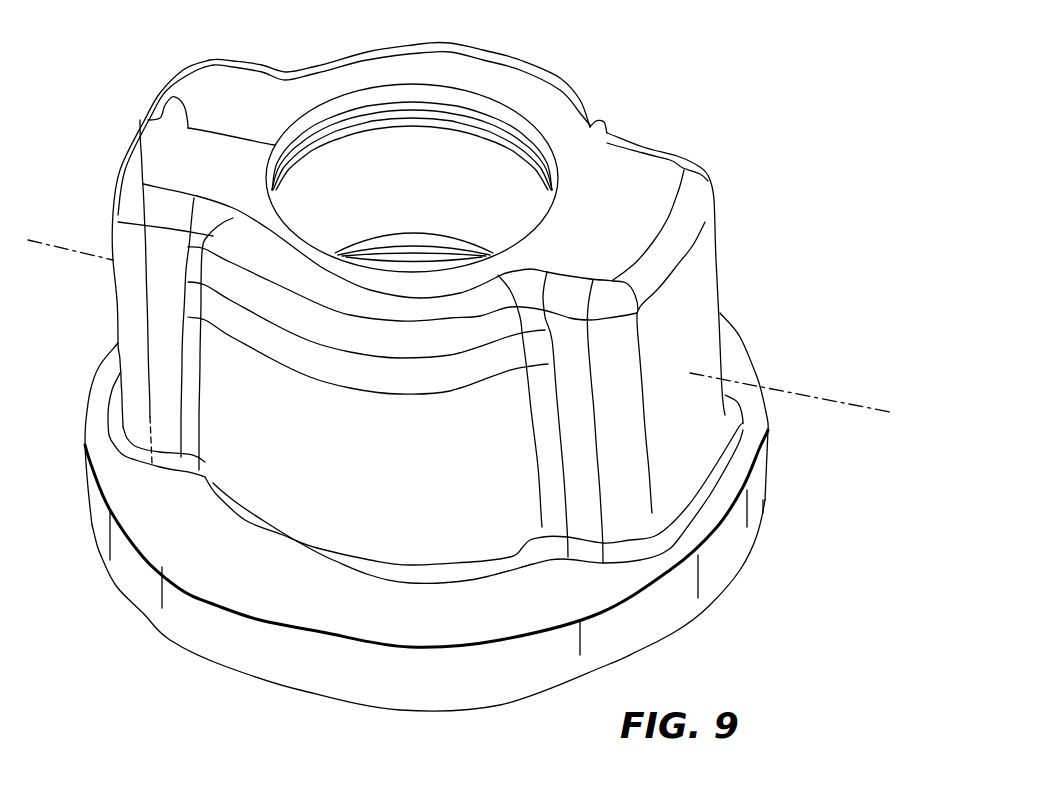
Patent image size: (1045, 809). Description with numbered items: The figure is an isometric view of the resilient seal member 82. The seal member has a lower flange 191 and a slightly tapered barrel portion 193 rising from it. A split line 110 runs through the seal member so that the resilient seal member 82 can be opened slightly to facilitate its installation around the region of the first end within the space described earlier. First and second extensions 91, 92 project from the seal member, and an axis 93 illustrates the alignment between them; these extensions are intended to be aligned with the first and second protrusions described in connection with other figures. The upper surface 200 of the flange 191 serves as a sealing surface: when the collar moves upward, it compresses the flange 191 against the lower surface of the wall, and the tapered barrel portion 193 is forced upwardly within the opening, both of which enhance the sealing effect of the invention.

The resilient seal member 82 is at (664, 74).
The first extension 91 is at (703, 255).
The second extension 92 is at (115, 300).
The axis 93 is at (828, 399).
The split line 110 is at (170, 99).
The flange 191 is at (358, 687).
The barrel portion 193 is at (273, 498).
The upper surface 200 is at (587, 600).